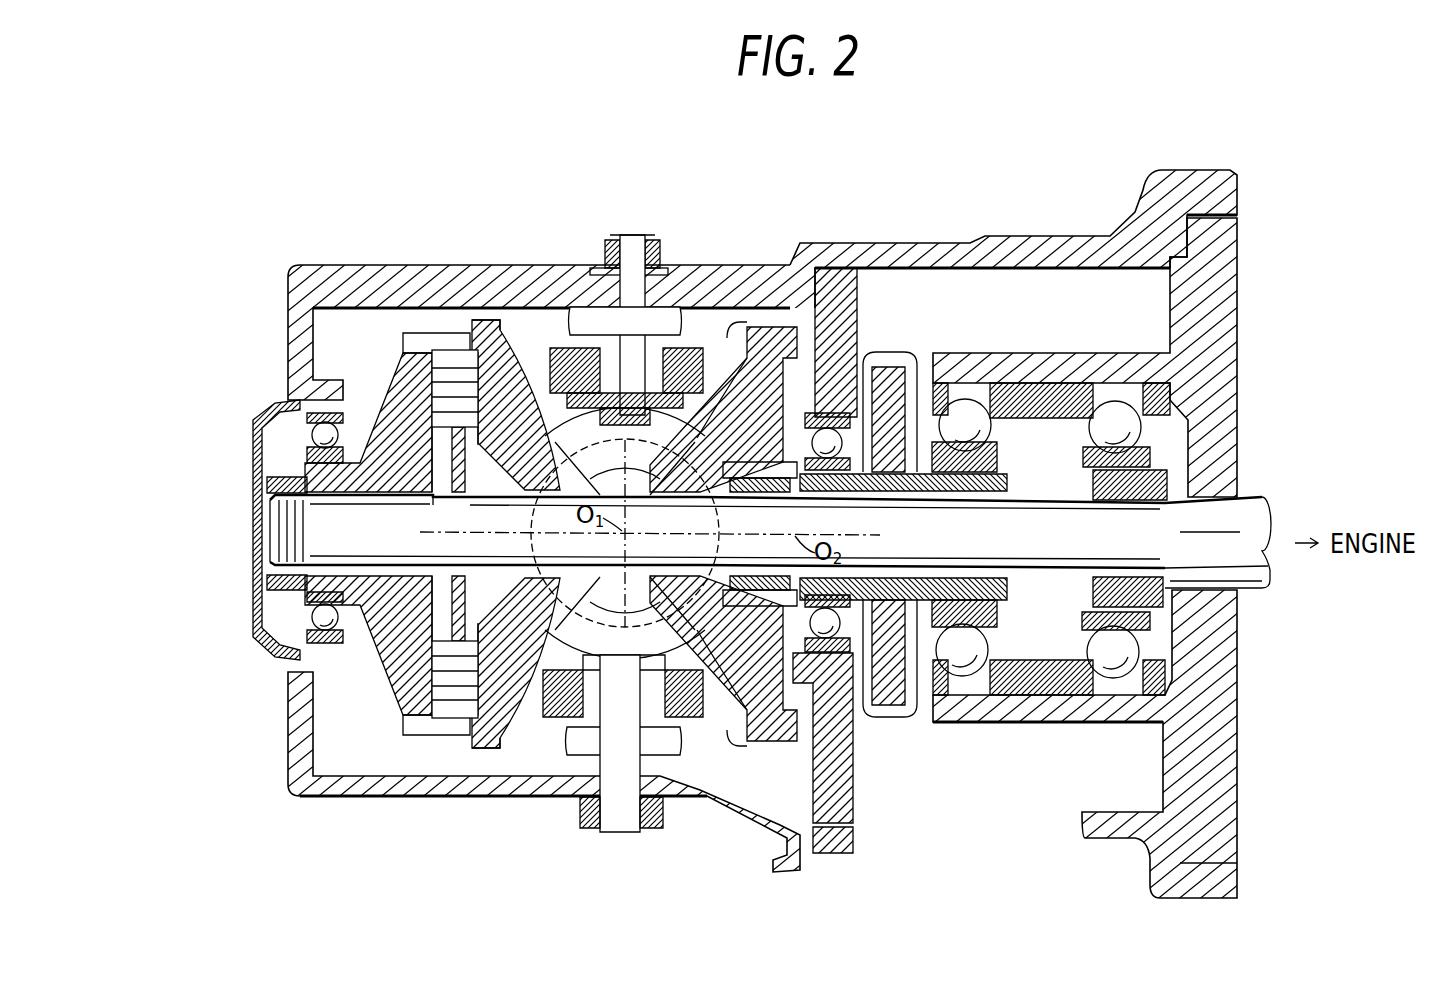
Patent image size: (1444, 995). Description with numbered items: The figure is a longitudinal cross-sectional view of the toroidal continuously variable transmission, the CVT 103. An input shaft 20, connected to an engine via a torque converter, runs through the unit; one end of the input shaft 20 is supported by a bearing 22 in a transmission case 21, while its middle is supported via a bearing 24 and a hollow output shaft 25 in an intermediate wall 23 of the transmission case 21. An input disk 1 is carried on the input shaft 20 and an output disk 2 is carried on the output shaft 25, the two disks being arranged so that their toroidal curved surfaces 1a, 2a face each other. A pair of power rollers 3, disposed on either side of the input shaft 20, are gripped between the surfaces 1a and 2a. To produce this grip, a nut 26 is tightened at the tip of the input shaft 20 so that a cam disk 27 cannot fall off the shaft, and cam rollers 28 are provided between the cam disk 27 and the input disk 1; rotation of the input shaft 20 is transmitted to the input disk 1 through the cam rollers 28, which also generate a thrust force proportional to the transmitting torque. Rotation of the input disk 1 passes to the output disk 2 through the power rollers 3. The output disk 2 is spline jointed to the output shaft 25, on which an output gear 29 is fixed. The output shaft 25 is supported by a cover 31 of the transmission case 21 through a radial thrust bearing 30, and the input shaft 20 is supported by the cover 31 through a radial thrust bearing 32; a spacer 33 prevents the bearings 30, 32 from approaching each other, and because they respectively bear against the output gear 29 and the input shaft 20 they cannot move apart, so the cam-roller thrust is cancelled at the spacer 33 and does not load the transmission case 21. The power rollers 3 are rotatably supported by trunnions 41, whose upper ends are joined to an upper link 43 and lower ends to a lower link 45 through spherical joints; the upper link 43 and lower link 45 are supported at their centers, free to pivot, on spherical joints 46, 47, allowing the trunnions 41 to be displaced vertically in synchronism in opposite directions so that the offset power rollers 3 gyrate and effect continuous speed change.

The input disk 1 is at (480, 310).
The toroidal curved surface 1a is at (520, 320).
The output disk 2 is at (770, 327).
The toroidal curved surface 2a is at (740, 325).
The power rollers 3 is at (700, 330).
The input shaft 20 is at (330, 540).
The transmission case 21 is at (910, 245).
The bearing 22 is at (318, 420).
The intermediate wall 23 is at (833, 280).
The bearing 24 is at (825, 438).
The output shaft 25 is at (853, 483).
The nut 26 is at (262, 478).
The cam disk 27 is at (397, 373).
The cam rollers 28 is at (440, 375).
The output gear 29 is at (893, 708).
The radial thrust bearing 30 is at (970, 412).
The cover 31 is at (1212, 228).
The radial thrust bearing 32 is at (1112, 410).
The spacer 33 is at (1035, 390).
The trunnions 41 is at (540, 390).
The upper link 43 is at (575, 330).
The lower link 45 is at (557, 718).
The spherical joint 46 is at (675, 300).
The spherical joint 47 is at (560, 803).
The CVT 103 is at (482, 820).